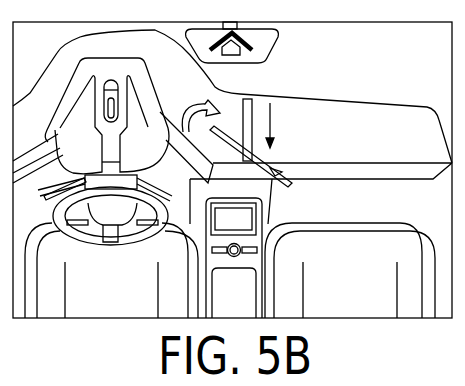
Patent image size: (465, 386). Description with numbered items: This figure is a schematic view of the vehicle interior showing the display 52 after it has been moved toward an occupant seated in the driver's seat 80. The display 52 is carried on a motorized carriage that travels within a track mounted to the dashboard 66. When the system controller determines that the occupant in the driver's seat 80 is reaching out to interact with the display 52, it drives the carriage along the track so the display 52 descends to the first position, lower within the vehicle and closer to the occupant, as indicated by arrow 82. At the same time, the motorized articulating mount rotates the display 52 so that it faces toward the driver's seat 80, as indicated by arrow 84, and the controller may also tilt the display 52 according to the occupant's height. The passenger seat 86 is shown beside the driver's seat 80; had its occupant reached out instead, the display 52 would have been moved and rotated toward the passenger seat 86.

The display 52 is at (292, 186).
The dashboard 66 is at (358, 142).
The driver's seat 80 is at (127, 293).
The arrow 82 is at (270, 120).
The arrow 84 is at (202, 100).
The passenger seat 86 is at (367, 293).